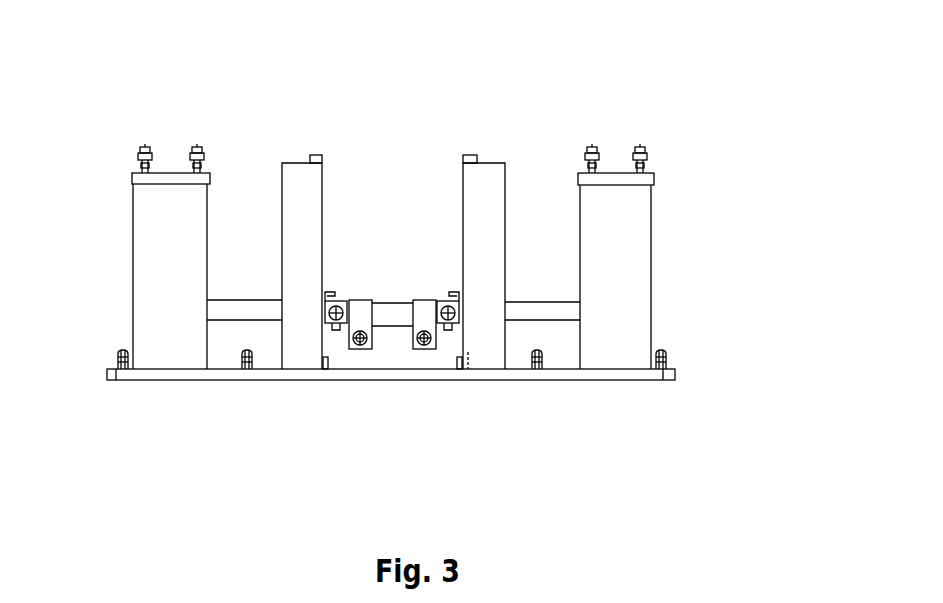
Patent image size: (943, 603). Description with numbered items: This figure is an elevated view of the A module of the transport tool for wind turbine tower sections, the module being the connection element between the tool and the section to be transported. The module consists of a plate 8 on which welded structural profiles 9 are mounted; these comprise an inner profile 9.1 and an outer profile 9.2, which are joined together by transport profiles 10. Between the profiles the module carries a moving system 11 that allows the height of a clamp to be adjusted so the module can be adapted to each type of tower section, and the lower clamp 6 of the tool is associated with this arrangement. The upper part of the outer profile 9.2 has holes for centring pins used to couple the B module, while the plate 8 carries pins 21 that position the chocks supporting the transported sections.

The lower clamp 6 is at (423, 320).
The plate 8 is at (600, 373).
The structural profile 9 is at (300, 205).
The inner structural profile 9.1 is at (482, 227).
The outer structural profile 9.2 is at (617, 289).
The transport profile 10 is at (545, 310).
The moving system 11 is at (390, 350).
The pin 21 is at (240, 360).